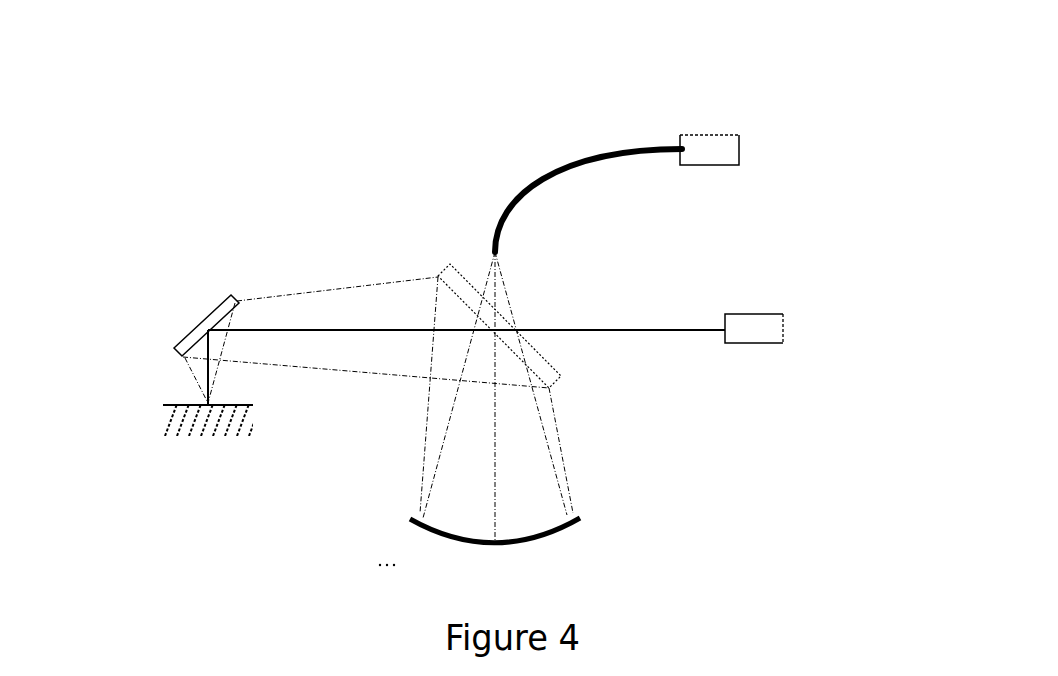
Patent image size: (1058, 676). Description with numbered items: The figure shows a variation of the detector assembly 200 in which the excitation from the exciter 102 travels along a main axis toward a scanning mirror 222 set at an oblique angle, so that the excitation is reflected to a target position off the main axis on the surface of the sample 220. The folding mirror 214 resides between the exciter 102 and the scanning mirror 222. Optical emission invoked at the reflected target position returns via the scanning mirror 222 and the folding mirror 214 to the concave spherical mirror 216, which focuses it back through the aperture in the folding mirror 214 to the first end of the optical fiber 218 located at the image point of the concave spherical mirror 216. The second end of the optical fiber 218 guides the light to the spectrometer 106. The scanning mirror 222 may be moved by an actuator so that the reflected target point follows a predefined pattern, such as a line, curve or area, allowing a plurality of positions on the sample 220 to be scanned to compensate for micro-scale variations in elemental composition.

The detector assembly 200 is at (587, 30).
The exciter 102 is at (783, 319).
The spectrometer 106 is at (739, 161).
The folding mirror 214 is at (445, 280).
The concave spherical mirror 216 is at (547, 537).
The optical fiber 218 is at (537, 185).
The sample 220 is at (163, 416).
The scanning mirror 222 is at (210, 306).